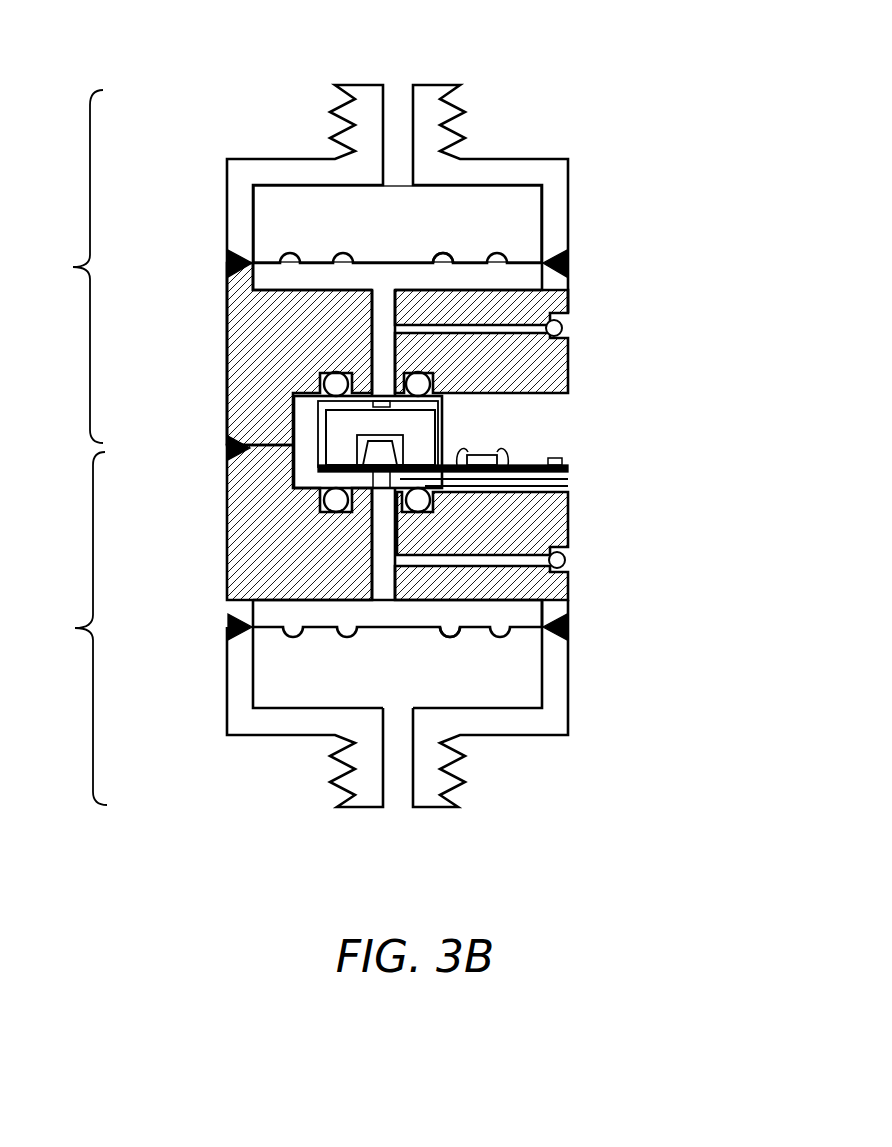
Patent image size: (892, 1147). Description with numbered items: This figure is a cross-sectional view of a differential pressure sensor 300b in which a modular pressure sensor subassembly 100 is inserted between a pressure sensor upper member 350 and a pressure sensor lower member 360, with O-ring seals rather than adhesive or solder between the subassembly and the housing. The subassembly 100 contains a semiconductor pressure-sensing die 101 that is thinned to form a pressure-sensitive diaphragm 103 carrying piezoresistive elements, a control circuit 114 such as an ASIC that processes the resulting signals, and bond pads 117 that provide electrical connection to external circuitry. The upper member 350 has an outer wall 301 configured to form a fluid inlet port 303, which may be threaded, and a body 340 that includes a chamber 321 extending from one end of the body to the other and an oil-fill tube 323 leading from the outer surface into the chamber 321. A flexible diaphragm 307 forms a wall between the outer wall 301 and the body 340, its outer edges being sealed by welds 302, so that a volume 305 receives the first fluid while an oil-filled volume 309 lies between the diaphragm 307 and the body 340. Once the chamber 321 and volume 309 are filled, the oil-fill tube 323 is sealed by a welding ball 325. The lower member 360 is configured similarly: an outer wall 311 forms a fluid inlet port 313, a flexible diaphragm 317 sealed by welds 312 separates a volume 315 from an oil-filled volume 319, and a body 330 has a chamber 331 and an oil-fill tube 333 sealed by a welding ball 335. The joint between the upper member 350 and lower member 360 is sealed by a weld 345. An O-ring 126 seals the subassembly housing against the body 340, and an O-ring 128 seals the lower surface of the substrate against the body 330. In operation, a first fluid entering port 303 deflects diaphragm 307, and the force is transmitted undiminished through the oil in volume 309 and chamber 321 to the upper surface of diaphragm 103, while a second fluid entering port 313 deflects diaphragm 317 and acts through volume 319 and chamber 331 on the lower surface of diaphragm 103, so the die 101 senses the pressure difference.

The differential pressure sensor 300b is at (677, 167).
The outer wall 301 is at (555, 180).
The welds 302 is at (227, 266).
The fluid inlet port 303 is at (397, 100).
The volume 305 is at (397, 224).
The flexible diaphragm 307 is at (442, 253).
The oil-filled volume 309 is at (397, 272).
The outer wall 311 is at (555, 688).
The welds 312 is at (227, 627).
The fluid inlet port 313 is at (397, 773).
The volume 315 is at (397, 654).
The flexible diaphragm 317 is at (452, 637).
The oil-filled volume 319 is at (397, 613).
The chamber 321 is at (377, 348).
The oil-fill tube 323 is at (483, 330).
The welding ball 325 is at (562, 328).
The body 330 is at (245, 573).
The chamber 331 is at (377, 530).
The oil-fill tube 333 is at (497, 557).
The welding ball 335 is at (565, 562).
The body 340 is at (255, 325).
The weld 345 is at (227, 450).
The pressure sensor upper member 350 is at (60, 266).
The pressure sensor lower member 360 is at (62, 628).
The pressure sensor subassembly 100 is at (503, 441).
The pressure-sensing die 101 is at (357, 448).
The diaphragm 103 is at (410, 462).
The control circuit 114 is at (478, 450).
The bond pads 117 is at (560, 457).
The O-ring 126 is at (440, 400).
The O-ring 128 is at (568, 487).